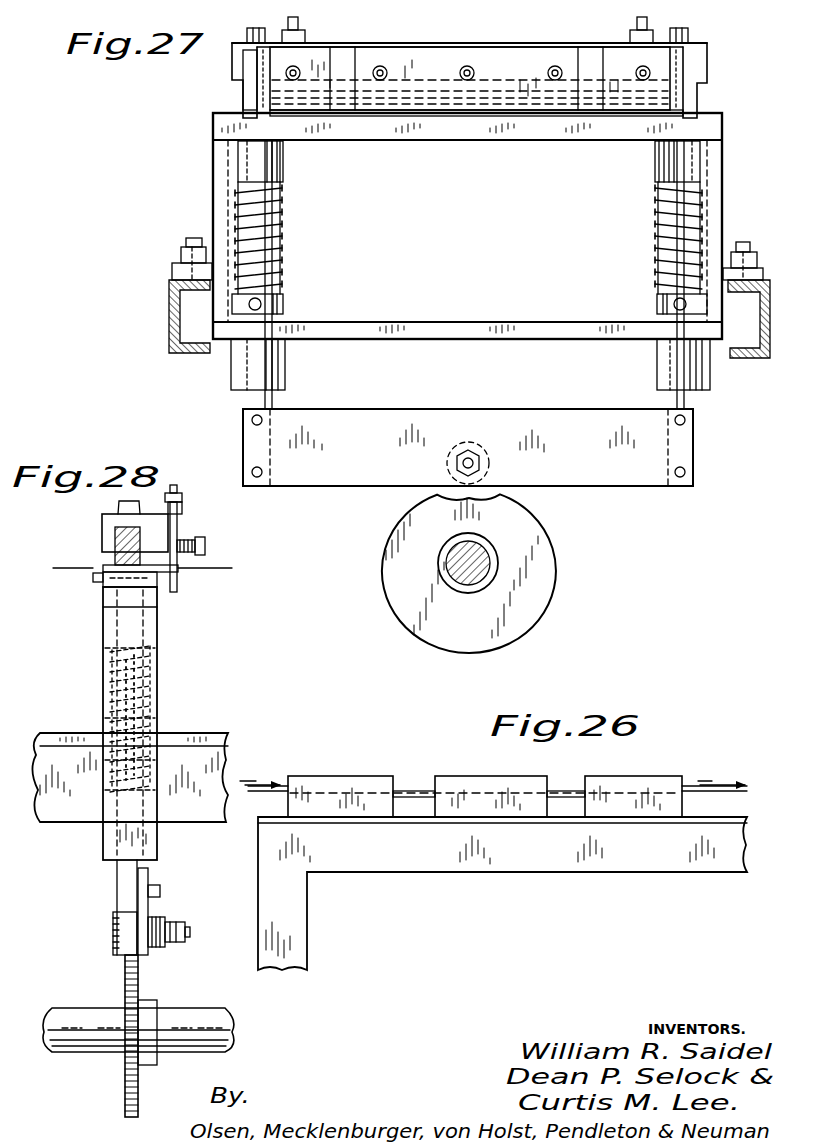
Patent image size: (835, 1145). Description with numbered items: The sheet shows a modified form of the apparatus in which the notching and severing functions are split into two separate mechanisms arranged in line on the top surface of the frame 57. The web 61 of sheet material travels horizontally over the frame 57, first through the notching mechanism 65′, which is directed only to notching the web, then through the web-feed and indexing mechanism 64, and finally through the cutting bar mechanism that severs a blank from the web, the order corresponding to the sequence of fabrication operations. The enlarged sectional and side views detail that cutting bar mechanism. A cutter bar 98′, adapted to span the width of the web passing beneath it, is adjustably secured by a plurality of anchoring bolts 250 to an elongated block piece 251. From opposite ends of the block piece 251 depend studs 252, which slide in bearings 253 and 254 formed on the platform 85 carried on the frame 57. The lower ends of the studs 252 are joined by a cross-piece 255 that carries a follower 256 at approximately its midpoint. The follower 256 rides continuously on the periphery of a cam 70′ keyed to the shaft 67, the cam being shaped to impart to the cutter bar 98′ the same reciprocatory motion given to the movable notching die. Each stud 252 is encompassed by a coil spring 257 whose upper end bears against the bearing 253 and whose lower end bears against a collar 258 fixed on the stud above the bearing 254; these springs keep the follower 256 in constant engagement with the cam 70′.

In FIG. 27, the cutter bar 98′ is at (440, 52).
In FIG. 28, the cutter bar 98′ is at (178, 572).
In FIG. 27, the elongated block piece 251 is at (232, 62).
In FIG. 28, the elongated block piece 251 is at (110, 530).
In FIG. 27, the web 61 is at (340, 112).
In FIG. 28, the web 61 is at (72, 569).
In FIG. 26, the web 61 is at (410, 790).
In FIG. 27, the platform 85 is at (213, 178).
In FIG. 28, the platform 85 is at (102, 600).
In FIG. 27, the bearing 253 is at (284, 178).
In FIG. 27, the stud 252 is at (262, 250).
In FIG. 28, the stud 252 is at (117, 875).
In FIG. 27, the coil spring 257 is at (266, 272).
In FIG. 27, the collar 258 is at (284, 302).
In FIG. 27, the bearing 254 is at (286, 372).
In FIG. 27, the cross-piece 255 is at (380, 422).
In FIG. 28, the cross-piece 255 is at (148, 905).
In FIG. 27, the follower 256 is at (468, 442).
In FIG. 28, the follower 256 is at (113, 956).
In FIG. 27, the frame 57 is at (170, 340).
In FIG. 28, the frame 57 is at (200, 735).
In FIG. 26, the frame 57 is at (420, 866).
In FIG. 27, the shaft 67 is at (452, 570).
In FIG. 28, the shaft 67 is at (77, 1047).
In FIG. 27, the cam 70′ is at (550, 558).
In FIG. 28, the cam 70′ is at (140, 1096).
In FIG. 28, the anchoring bolt 250 is at (205, 546).
In FIG. 26, the notching mechanism 65′ is at (366, 775).
In FIG. 26, the web-feed and indexing mechanism 64 is at (497, 775).